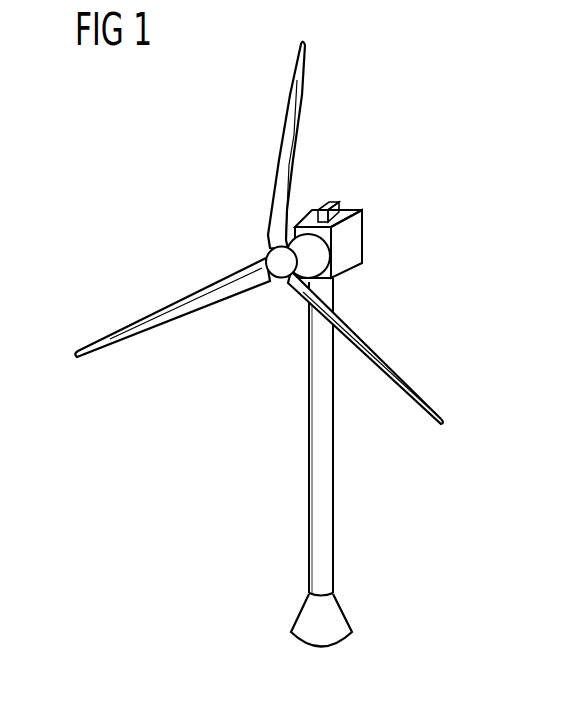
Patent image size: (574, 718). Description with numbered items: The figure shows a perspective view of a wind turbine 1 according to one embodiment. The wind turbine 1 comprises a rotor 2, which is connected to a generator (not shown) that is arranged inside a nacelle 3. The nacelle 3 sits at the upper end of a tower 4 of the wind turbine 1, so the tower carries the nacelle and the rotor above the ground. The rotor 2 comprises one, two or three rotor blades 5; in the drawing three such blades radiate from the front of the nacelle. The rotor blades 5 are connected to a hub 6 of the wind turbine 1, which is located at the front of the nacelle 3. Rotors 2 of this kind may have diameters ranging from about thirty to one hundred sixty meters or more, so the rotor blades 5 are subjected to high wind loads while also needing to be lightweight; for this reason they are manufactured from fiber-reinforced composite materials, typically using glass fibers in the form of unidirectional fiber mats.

The wind turbine 1 is at (152, 134).
The rotor 2 is at (168, 290).
The nacelle 3 is at (353, 228).
The tower 4 is at (330, 503).
The rotor blades 5 is at (296, 157).
The hub 6 is at (310, 256).